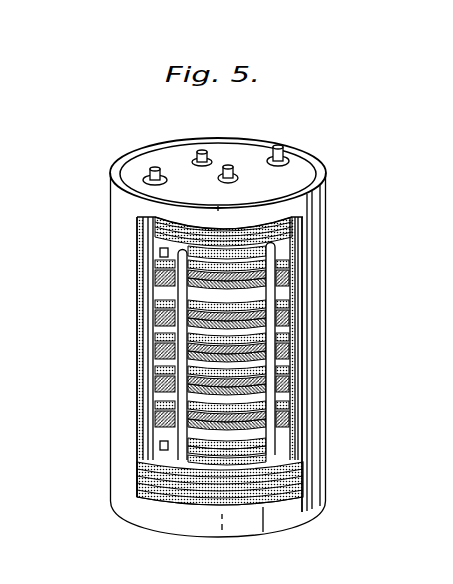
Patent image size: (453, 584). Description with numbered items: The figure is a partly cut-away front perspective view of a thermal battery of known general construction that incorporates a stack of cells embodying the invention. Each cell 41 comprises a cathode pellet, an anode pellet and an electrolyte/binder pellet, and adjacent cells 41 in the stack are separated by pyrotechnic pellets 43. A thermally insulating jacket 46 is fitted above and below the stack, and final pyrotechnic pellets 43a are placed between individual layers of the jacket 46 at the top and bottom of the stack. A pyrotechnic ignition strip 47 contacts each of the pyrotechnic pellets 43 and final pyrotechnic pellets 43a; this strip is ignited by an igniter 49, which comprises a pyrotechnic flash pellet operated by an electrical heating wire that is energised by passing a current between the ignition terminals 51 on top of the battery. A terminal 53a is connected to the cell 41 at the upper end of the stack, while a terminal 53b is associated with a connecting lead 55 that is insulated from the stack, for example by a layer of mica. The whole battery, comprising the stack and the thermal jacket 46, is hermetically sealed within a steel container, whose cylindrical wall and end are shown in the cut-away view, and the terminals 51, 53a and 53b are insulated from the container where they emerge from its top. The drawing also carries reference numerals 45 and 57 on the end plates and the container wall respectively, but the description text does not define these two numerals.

The cell 41 is at (158, 283).
The pyrotechnic pellet 43 is at (283, 262).
The final pyrotechnic pellet 43a is at (290, 243).
The current collector plate 45 is at (143, 427).
The thermally insulating jacket 46 is at (162, 253).
The pyrotechnic ignition strip 47 is at (160, 497).
The igniter 49 is at (180, 250).
The ignition terminal 51 is at (202, 151).
The terminal 53a is at (279, 146).
The terminal 53b is at (155, 168).
The connecting lead 55 is at (300, 335).
The container 57 is at (317, 365).